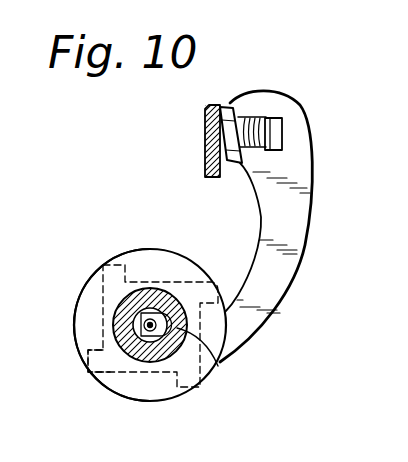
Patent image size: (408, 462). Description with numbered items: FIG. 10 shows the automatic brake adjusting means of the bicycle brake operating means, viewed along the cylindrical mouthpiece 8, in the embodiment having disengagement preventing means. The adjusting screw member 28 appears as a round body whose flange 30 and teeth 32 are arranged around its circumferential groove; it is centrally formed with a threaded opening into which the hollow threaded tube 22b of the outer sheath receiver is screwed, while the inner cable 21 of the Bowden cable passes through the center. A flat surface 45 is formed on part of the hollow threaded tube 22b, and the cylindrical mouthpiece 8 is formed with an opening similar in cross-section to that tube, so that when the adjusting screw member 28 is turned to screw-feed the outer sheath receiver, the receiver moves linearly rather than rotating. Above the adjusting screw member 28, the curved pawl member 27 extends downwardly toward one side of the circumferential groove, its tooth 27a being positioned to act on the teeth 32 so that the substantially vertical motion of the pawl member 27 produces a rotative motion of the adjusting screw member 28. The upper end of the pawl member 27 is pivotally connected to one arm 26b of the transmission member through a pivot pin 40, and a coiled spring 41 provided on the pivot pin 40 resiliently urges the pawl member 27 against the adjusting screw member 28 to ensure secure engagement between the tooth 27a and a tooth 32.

The cylindrical mouthpiece 8 is at (222, 366).
The inner cable 21 is at (153, 330).
The hollow threaded tube 22b is at (146, 330).
The arm of the transmission member 26b is at (207, 163).
The pawl member 27 is at (313, 217).
The tooth 27a is at (214, 303).
The adjusting screw member 28 is at (82, 286).
The flange 30 is at (74, 325).
The teeth 32 is at (80, 372).
The pivot pin 40 is at (285, 132).
The coiled spring 41 is at (248, 120).
The flat surface 45 is at (157, 340).